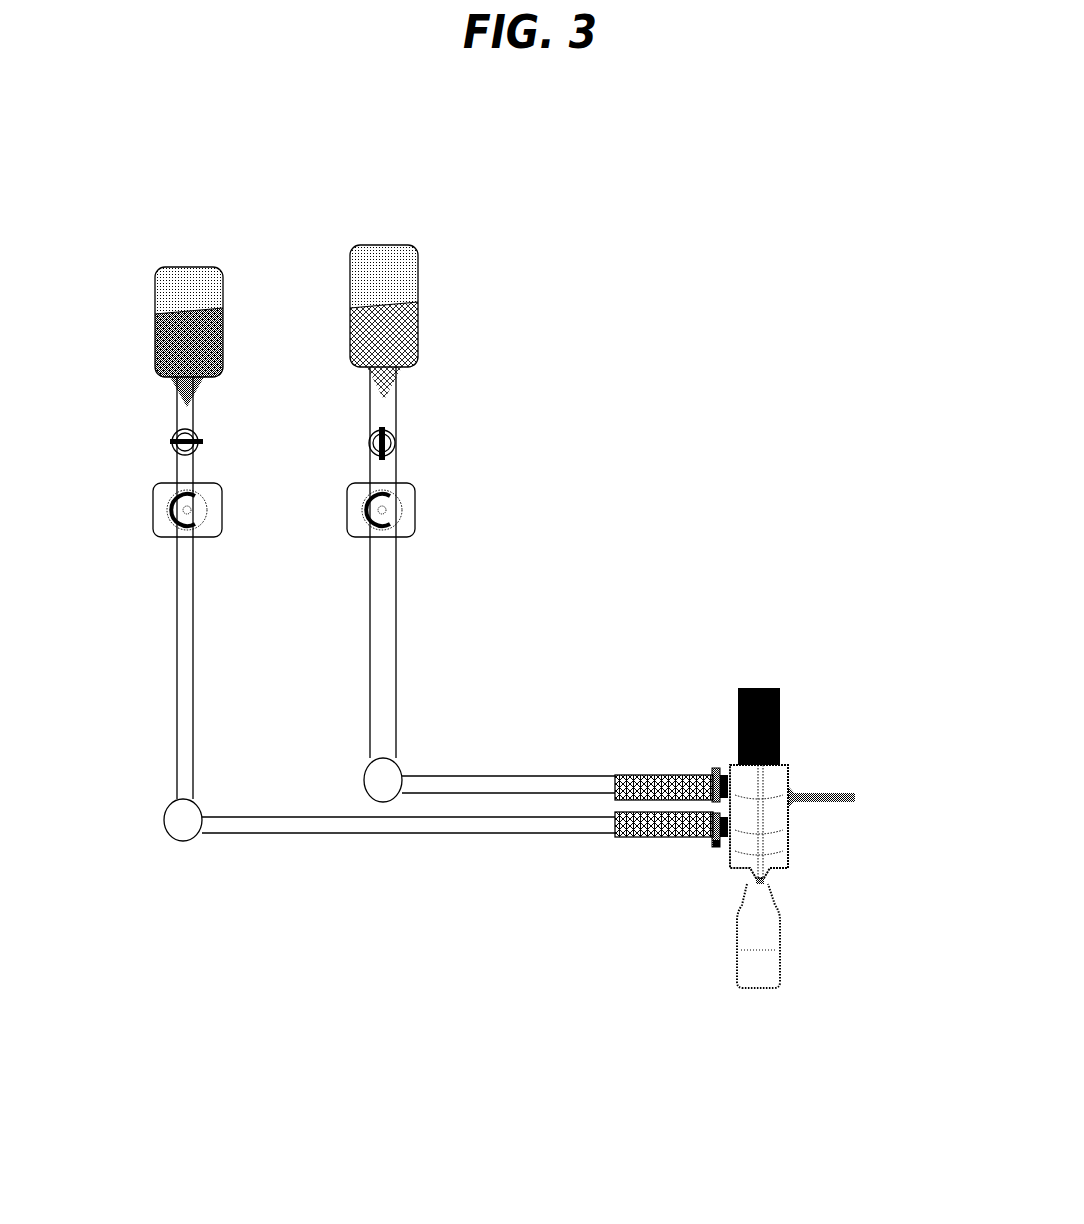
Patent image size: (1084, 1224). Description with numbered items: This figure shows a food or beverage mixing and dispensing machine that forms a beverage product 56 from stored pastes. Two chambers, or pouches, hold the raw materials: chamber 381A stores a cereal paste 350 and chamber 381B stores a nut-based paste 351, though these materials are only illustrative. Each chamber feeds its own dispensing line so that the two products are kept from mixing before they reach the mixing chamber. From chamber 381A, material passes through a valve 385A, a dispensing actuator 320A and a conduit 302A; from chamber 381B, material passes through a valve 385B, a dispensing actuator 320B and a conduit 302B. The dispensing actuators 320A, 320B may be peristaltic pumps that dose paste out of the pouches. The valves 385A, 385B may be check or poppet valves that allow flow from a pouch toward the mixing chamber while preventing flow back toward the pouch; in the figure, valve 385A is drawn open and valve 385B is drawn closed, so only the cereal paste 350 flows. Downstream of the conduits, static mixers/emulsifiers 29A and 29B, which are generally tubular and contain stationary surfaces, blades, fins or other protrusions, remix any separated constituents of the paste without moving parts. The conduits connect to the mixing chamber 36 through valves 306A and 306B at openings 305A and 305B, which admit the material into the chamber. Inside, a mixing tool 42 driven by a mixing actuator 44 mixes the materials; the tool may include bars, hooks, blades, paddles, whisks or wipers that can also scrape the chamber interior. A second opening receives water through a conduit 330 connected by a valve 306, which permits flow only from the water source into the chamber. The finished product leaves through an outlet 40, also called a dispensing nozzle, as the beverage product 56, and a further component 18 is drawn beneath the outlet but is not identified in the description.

The chamber 381B is at (195, 278).
The chamber 381A is at (390, 273).
The nut-based paste 351 is at (175, 335).
The cereal paste 350 is at (398, 327).
The valve 385B is at (173, 440).
The valve 385A is at (393, 430).
The dispensing actuator 320B is at (215, 532).
The dispensing actuator 320A is at (402, 523).
The conduit 302B is at (183, 718).
The conduit 302A is at (385, 667).
The static mixer/emulsifier 29A is at (665, 790).
The static mixer/emulsifier 29B is at (637, 835).
The opening 305A is at (721, 770).
The opening 305B is at (718, 847).
The valve 306A is at (715, 772).
The valve 306B is at (716, 830).
The valve 306 is at (790, 797).
The mixing actuator 44 is at (770, 703).
The conduit 330 is at (825, 793).
The mixing tool 42 is at (767, 855).
The mixing chamber 36 is at (717, 848).
The outlet 40 is at (748, 892).
The beverage product 56 is at (750, 950).
The vial 18 is at (772, 963).